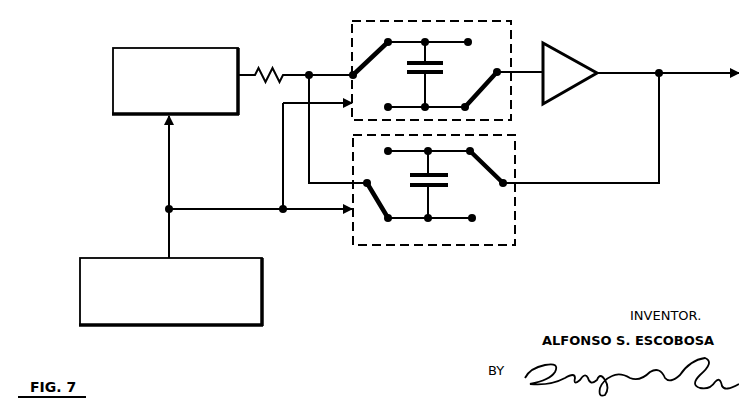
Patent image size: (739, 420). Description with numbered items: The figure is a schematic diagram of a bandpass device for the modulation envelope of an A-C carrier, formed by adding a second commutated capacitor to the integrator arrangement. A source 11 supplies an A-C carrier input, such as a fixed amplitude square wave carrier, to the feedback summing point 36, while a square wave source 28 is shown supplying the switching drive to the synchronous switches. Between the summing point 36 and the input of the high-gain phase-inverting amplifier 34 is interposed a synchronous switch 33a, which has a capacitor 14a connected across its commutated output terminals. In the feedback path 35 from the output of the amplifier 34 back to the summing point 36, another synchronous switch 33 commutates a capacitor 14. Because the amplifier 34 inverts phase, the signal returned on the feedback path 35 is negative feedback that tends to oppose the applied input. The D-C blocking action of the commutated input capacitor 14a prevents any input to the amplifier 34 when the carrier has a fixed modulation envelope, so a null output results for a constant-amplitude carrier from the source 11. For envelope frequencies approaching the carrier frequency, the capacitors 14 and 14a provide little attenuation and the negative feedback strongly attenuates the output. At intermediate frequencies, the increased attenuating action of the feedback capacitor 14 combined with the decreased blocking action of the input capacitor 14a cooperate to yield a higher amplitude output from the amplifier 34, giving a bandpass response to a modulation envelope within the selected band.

The source 11 is at (195, 53).
The feedback summing point 36 is at (309, 72).
The feedback path 35 is at (309, 145).
The synchronous switch 33a is at (453, 70).
The capacitor 14a is at (413, 76).
The phase-inverting amplifier 34 is at (558, 63).
The synchronous switch 33 is at (454, 186).
The capacitor 14 is at (412, 175).
The square wave source 28 is at (254, 277).